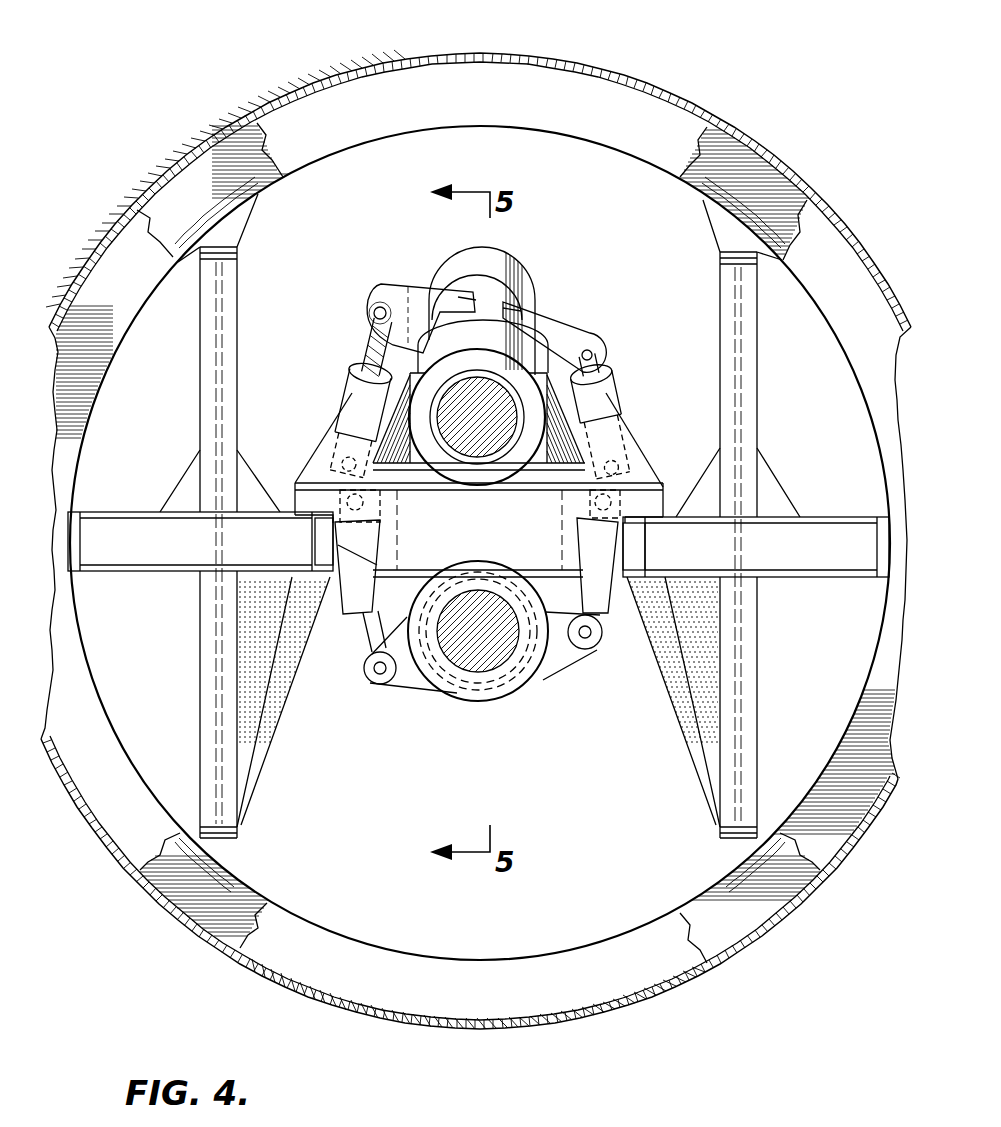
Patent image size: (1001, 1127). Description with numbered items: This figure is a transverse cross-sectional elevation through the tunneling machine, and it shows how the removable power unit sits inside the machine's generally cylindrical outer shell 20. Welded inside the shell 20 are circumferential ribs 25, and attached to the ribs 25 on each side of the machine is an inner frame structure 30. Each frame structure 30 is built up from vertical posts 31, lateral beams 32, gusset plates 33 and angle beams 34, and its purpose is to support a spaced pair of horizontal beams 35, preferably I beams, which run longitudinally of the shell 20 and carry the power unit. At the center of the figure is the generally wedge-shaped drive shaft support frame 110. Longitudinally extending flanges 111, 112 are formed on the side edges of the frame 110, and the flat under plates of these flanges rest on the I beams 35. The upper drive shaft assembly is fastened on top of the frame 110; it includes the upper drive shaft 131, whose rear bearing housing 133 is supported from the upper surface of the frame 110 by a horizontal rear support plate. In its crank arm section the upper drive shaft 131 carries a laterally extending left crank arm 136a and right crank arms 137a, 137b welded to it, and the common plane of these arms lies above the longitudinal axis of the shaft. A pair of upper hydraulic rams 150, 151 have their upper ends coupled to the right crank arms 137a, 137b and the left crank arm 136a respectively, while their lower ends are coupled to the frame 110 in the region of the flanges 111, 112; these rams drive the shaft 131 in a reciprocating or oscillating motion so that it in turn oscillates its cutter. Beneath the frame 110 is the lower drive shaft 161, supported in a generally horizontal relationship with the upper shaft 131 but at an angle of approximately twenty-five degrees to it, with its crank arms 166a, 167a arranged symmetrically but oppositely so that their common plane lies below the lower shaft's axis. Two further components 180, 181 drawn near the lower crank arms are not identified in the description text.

The outer shell 20 is at (582, 60).
The circumferential ribs 25 is at (416, 82).
The inner frame structure 30 is at (195, 402).
The vertical posts 31 is at (200, 375).
The lateral beams 32 is at (130, 571).
The gusset plates 33 is at (193, 490).
The angle beams 34 is at (246, 800).
The horizontal beams 35 is at (315, 550).
The drive shaft support frame 110 is at (470, 551).
The flange 111 is at (347, 490).
The flange 112 is at (640, 495).
The upper drive shaft 131 is at (482, 455).
The rear bearing housing 133 is at (487, 250).
The left crank arm 136a is at (604, 346).
The right crank arm 137a is at (364, 312).
The right crank arm 137b is at (415, 285).
The upper hydraulic ram 150 is at (355, 380).
The upper hydraulic ram 151 is at (612, 390).
The lower drive shaft 161 is at (470, 600).
The crank arm of lower drive shaft 166a is at (558, 653).
The crank arm of lower drive shaft 167a is at (379, 686).
The left lower hydraulic cylinder 180 is at (362, 605).
The right lower hydraulic cylinder 181 is at (605, 640).